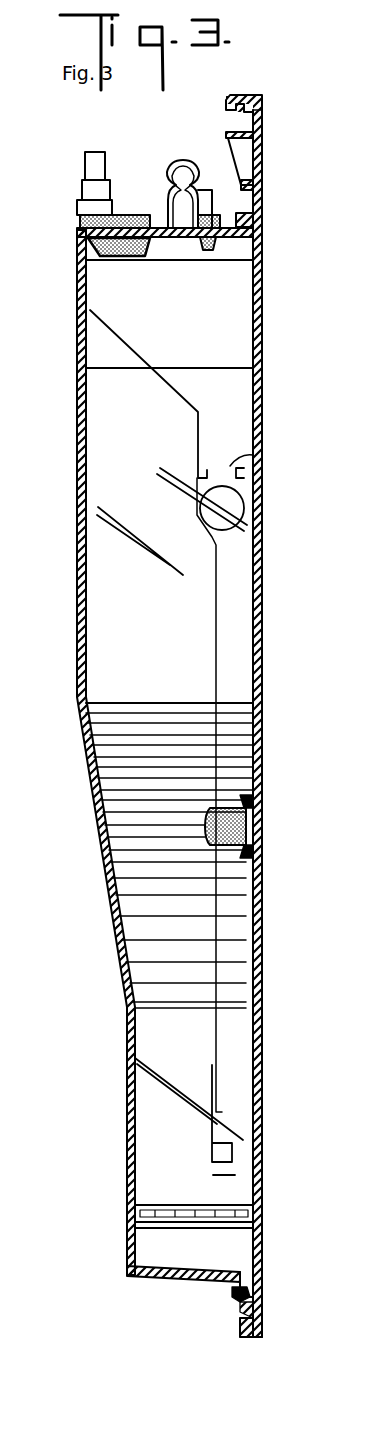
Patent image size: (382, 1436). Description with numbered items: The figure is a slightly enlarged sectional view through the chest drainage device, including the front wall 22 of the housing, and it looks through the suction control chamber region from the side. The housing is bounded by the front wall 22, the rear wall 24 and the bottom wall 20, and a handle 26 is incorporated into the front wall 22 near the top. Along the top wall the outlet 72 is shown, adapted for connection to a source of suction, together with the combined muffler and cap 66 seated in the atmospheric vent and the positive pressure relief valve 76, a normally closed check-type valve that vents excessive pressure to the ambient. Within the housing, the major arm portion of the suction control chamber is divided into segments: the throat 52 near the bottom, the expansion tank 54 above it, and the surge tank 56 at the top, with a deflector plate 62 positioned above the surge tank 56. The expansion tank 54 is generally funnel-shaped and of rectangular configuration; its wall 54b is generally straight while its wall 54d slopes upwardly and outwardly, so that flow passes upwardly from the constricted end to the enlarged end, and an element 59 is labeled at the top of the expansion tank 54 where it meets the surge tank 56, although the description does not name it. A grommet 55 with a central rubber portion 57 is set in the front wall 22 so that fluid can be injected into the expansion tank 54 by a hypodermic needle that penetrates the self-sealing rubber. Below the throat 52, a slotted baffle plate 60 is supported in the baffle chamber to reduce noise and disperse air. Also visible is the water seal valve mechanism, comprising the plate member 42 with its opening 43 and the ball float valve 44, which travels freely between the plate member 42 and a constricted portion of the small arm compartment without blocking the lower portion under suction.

The bottom wall 20 is at (183, 1278).
The front wall 22 is at (262, 297).
The rear wall 24 is at (78, 497).
The handle 26 is at (262, 120).
The plate member 42 is at (244, 470).
The opening 43 is at (237, 458).
The ball float valve 44 is at (245, 505).
The throat 52 is at (189, 1116).
The expansion tank 54 is at (158, 881).
The wall of expansion tank 54b is at (258, 887).
The wall of expansion tank 54d is at (103, 867).
The grommet 55 is at (262, 812).
The surge tank 56 is at (170, 607).
The central rubber portion 57 is at (255, 830).
The top stack plate 59 is at (158, 705).
The baffle plate 60 is at (223, 1227).
The deflector plate 62 is at (237, 347).
The combined muffler and cap 66 is at (131, 215).
The outlet 72 is at (88, 163).
The positive pressure relief valve 76 is at (206, 188).